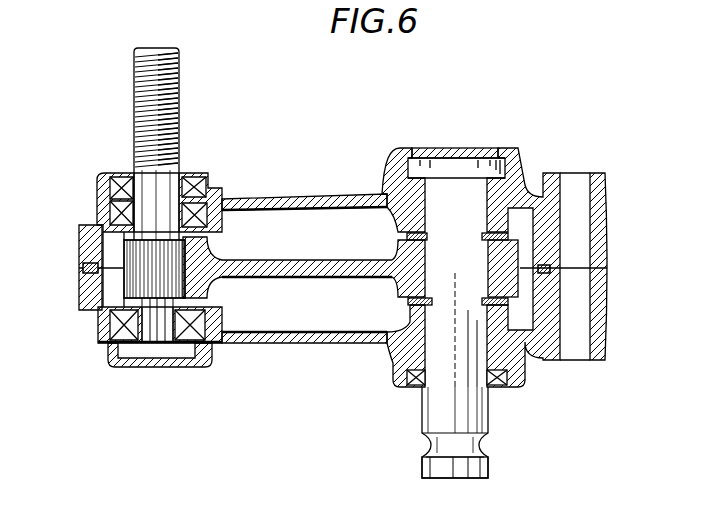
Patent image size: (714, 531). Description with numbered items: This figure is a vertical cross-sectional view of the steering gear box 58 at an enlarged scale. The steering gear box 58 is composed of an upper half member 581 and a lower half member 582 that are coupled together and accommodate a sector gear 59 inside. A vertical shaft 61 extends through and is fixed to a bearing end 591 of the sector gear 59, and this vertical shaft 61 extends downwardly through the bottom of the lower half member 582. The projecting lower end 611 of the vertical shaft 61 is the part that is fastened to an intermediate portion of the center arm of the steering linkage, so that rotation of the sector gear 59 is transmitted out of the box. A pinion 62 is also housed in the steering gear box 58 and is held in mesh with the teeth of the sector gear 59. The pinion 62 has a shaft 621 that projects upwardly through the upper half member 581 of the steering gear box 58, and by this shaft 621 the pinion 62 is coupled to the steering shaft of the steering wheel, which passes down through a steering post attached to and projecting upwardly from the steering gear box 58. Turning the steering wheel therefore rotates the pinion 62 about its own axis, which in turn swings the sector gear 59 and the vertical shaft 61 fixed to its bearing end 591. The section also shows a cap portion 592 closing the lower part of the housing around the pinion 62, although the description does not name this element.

The steering gear box 58 is at (339, 194).
The upper half member 581 is at (287, 202).
The lower half member 582 is at (312, 338).
The sector gear 59 is at (297, 270).
The bearing end 591 is at (512, 260).
The end cap 592 is at (177, 343).
The vertical shaft 61 is at (462, 418).
The projecting lower end 611 is at (445, 470).
The pinion 62 is at (138, 257).
The shaft 621 is at (182, 104).